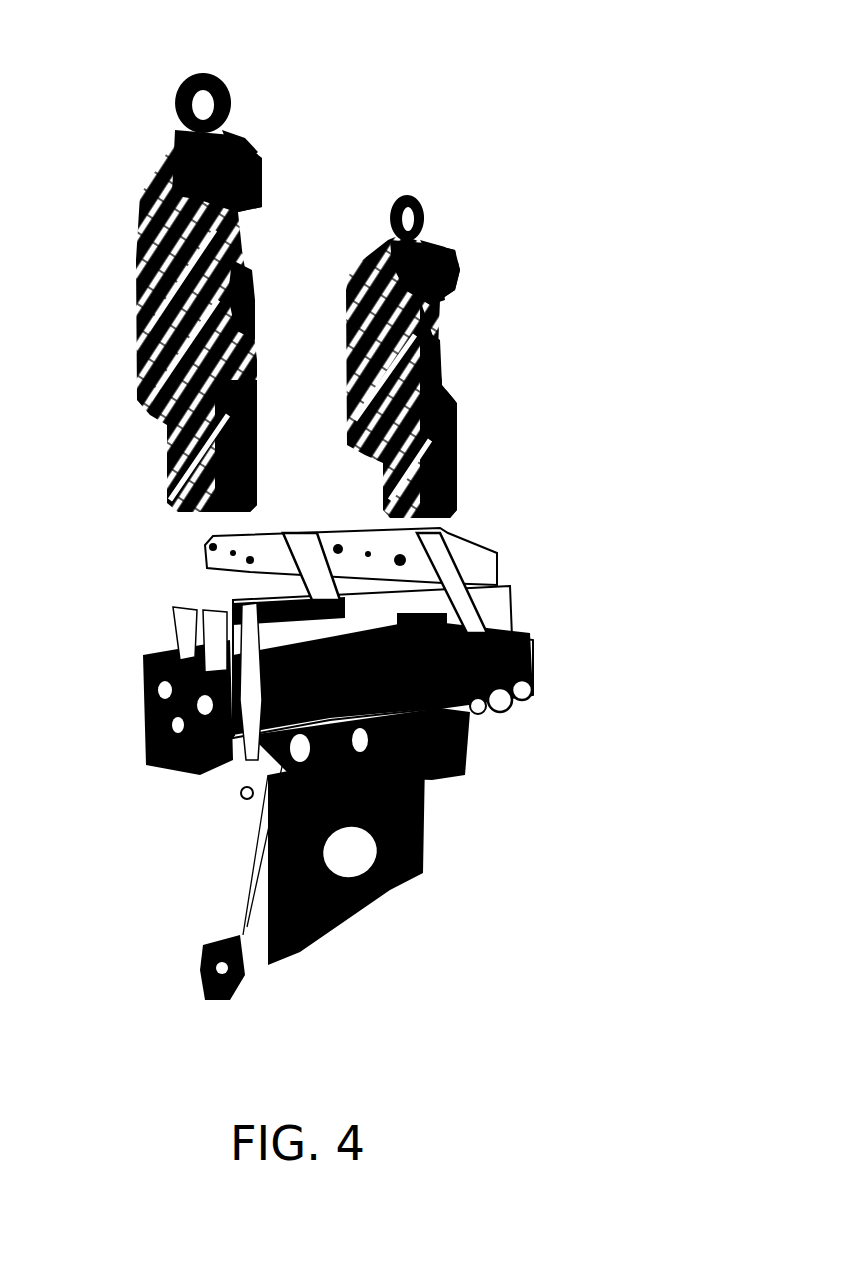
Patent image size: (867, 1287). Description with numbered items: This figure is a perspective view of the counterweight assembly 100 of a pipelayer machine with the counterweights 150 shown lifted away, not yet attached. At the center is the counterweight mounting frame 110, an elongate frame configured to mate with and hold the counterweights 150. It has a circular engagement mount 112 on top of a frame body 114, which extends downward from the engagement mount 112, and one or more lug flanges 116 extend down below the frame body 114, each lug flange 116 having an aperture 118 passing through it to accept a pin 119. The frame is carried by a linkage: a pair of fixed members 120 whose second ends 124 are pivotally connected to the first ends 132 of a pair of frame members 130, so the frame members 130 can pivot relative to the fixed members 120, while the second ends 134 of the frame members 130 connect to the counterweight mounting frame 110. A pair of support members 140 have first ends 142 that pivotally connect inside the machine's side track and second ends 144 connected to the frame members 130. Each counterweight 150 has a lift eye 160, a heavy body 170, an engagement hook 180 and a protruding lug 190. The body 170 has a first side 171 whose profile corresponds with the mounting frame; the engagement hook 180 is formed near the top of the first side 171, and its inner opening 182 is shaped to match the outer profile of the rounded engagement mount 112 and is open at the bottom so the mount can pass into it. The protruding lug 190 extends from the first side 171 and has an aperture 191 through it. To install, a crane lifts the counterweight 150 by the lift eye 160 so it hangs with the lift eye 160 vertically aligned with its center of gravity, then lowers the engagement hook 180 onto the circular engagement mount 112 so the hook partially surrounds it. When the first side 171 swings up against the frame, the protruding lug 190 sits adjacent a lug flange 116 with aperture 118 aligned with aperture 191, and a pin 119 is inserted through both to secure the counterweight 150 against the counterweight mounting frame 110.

The counterweight assembly 100 is at (592, 492).
The counterweight mounting frame 110 is at (538, 655).
The engagement mount 112 is at (215, 625).
The frame body 114 is at (232, 736).
The lug flange 116 is at (522, 676).
The aperture 118 is at (478, 708).
The pin 119 is at (456, 735).
The fixed member 120 is at (245, 600).
The second end of fixed member 124 is at (225, 550).
The frame member 130 is at (305, 545).
The first end of frame member 132 is at (210, 547).
The second end of frame member 134 is at (442, 716).
The support member 140 is at (330, 925).
The first end of support member 142 is at (215, 985).
The second end of support member 144 is at (250, 562).
The counterweight 150 is at (246, 127).
The lift eye 160 is at (195, 75).
The body 170 is at (137, 328).
The first side 171 is at (165, 174).
The engagement hook 180 is at (262, 174).
The inner opening 182 is at (245, 135).
The protruding lug 190 is at (160, 265).
The aperture 191 is at (222, 300).